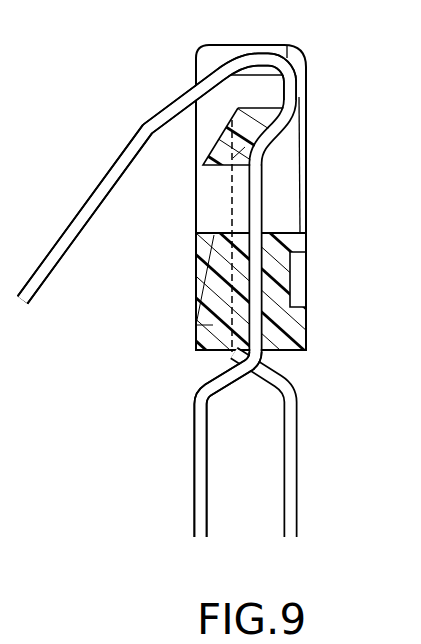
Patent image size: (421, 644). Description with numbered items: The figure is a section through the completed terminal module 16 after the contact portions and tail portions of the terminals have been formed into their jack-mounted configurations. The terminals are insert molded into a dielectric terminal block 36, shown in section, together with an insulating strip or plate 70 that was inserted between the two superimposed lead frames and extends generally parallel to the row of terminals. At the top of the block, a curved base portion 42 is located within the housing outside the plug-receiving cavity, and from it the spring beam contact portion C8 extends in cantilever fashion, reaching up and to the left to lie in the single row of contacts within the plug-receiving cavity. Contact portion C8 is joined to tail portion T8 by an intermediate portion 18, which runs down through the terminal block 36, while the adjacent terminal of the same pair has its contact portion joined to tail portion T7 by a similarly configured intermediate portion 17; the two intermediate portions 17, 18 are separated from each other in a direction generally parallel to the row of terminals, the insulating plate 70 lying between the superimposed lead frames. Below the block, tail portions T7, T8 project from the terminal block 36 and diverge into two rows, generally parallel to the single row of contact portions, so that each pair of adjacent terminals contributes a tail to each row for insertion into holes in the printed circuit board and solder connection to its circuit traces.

The terminal module 16 is at (338, 95).
The intermediate portion 18 is at (255, 213).
The curved base portion 42 is at (268, 61).
The insulating plate 70 is at (243, 202).
The terminal block 36 is at (278, 291).
The intermediate portion 17 is at (215, 285).
The spring beam contact portion C8 is at (88, 203).
The tail portion T7 is at (300, 505).
The tail portion T8 is at (200, 487).